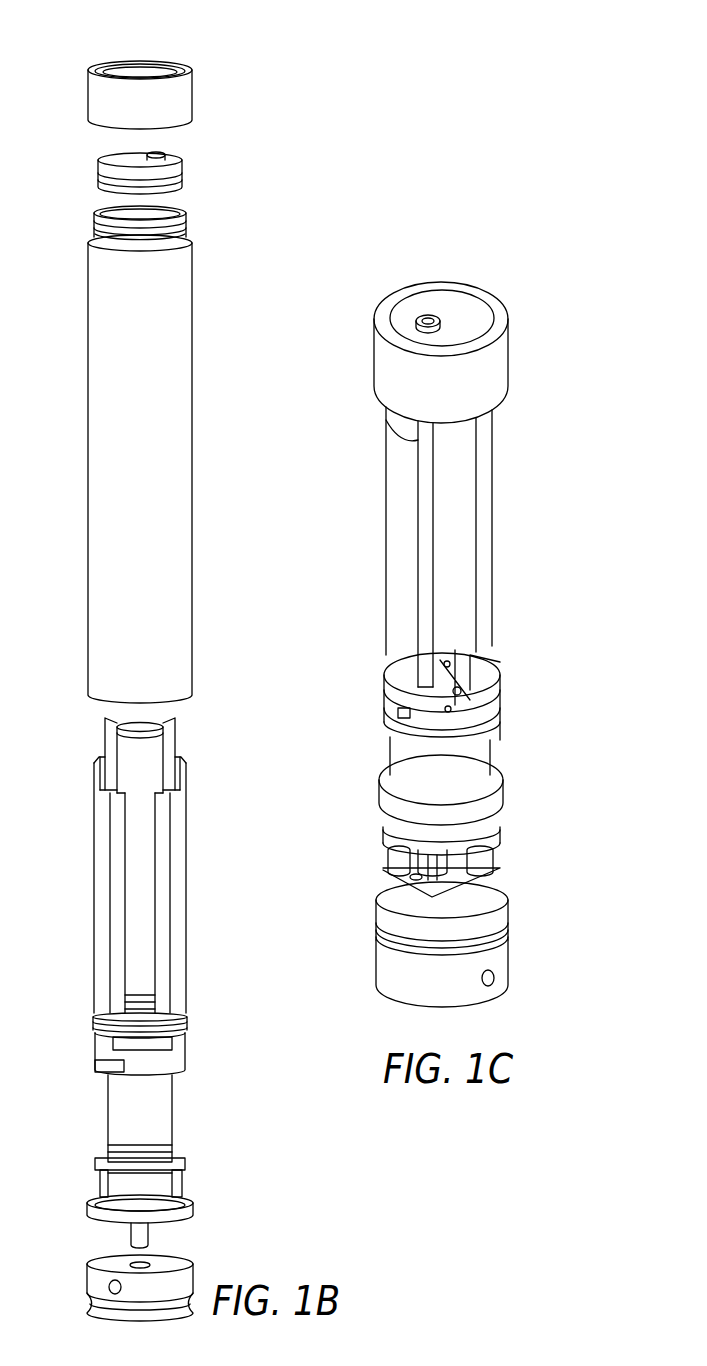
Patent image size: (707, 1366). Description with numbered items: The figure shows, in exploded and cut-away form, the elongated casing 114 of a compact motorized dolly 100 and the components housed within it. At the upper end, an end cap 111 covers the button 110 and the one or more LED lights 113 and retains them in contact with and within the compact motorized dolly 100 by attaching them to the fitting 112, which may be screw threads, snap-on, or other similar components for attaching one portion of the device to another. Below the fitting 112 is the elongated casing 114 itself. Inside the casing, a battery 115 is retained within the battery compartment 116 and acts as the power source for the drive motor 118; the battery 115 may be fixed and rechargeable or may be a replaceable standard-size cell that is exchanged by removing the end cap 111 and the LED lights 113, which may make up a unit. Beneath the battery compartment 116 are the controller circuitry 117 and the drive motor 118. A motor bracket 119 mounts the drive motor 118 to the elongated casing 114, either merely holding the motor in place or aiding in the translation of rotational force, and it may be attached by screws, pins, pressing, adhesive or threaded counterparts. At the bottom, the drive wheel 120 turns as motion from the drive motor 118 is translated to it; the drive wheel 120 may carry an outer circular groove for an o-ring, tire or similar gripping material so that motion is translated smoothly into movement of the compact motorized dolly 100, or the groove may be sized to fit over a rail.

In FIG. 1B, the compact motorized dolly 100 is at (166, 40).
In FIG. 1C, the compact motorized dolly 100 is at (452, 258).
In FIG. 1C, the button 110 is at (426, 318).
In FIG. 1B, the end cap 111 is at (97, 100).
In FIG. 1C, the end cap 111 is at (383, 368).
In FIG. 1B, the fitting 112 is at (187, 222).
In FIG. 1B, the LED lights 113 is at (182, 175).
In FIG. 1B, the elongated casing 114 is at (118, 603).
In FIG. 1B, the battery 115 is at (138, 862).
In FIG. 1B, the battery compartment 116 is at (180, 941).
In FIG. 1C, the battery compartment 116 is at (417, 636).
In FIG. 1B, the controller circuitry 117 is at (187, 1020).
In FIG. 1C, the controller circuitry 117 is at (397, 705).
In FIG. 1B, the drive motor 118 is at (157, 1094).
In FIG. 1C, the drive motor 118 is at (413, 773).
In FIG. 1B, the motor bracket 119 is at (90, 1210).
In FIG. 1C, the motor bracket 119 is at (382, 917).
In FIG. 1B, the drive wheel 120 is at (98, 1302).
In FIG. 1C, the drive wheel 120 is at (383, 972).